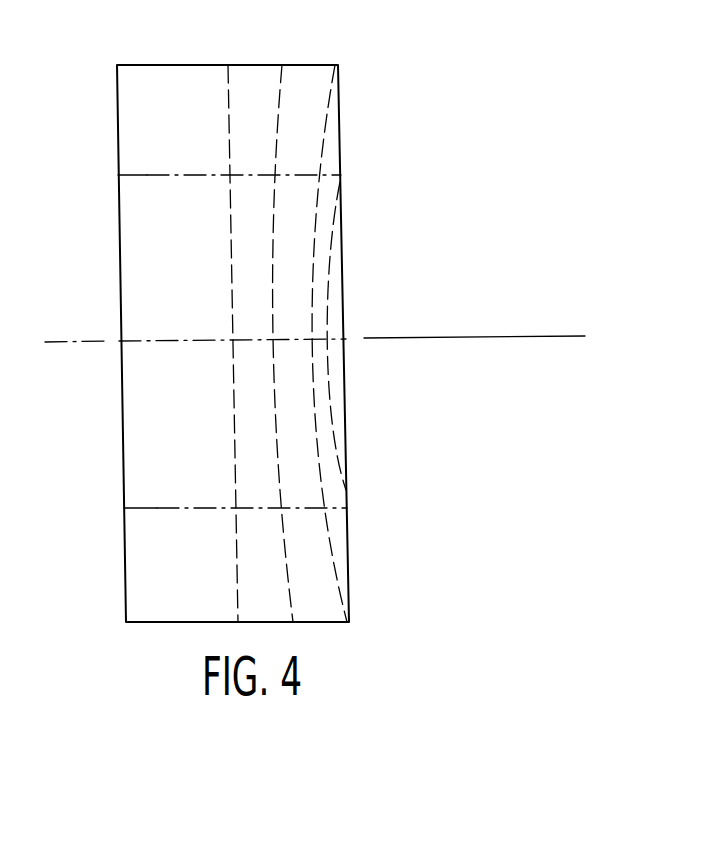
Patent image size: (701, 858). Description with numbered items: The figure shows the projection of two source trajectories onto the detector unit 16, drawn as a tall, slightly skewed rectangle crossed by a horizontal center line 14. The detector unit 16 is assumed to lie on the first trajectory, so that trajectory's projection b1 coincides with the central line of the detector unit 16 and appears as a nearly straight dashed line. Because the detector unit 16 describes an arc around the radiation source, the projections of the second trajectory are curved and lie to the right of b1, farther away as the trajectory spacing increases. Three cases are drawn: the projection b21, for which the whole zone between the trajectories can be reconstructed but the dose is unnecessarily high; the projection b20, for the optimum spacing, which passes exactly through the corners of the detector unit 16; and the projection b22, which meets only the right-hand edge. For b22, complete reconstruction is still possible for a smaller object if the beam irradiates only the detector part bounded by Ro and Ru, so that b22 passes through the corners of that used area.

The detector unit 16 is at (170, 65).
The center axis line 14 is at (457, 337).
The upper boundary of the used detector area Ro is at (147, 175).
The lower boundary of the used detector area Ru is at (157, 508).
The projection of trajectory T1 b1 is at (232, 103).
The projection of trajectory T2 for a non-optimum distance b21 is at (282, 97).
The projection of trajectory T2 for the optimum distance b20 is at (327, 125).
The projection of trajectory T2 for an even larger distance b22 is at (328, 270).